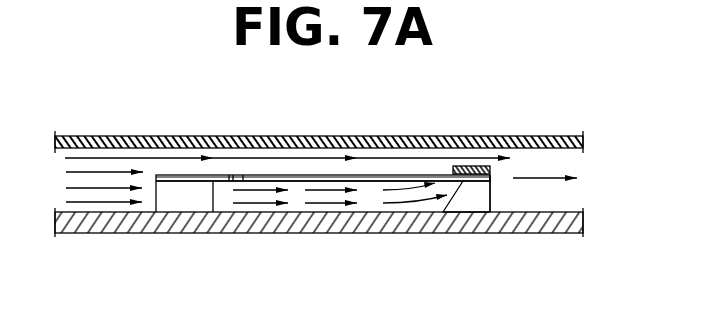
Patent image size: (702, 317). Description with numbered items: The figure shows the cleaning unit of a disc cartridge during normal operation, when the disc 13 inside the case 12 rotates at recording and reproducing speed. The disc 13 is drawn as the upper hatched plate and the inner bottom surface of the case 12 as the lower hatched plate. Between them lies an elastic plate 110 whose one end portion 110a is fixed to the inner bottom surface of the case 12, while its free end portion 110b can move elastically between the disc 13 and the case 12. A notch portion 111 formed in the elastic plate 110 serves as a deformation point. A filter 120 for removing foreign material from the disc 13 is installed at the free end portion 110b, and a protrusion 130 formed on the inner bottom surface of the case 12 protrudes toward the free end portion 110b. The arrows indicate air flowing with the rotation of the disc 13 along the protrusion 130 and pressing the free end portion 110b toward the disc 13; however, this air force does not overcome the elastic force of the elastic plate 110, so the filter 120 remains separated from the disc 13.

The case 12 is at (315, 233).
The disc 13 is at (418, 136).
The elastic plate 110 is at (362, 143).
The one end portion 110a is at (165, 175).
The free end portion 110b is at (490, 177).
The notch portion 111 is at (233, 175).
The filter 120 is at (473, 166).
The protrusion 130 is at (471, 200).